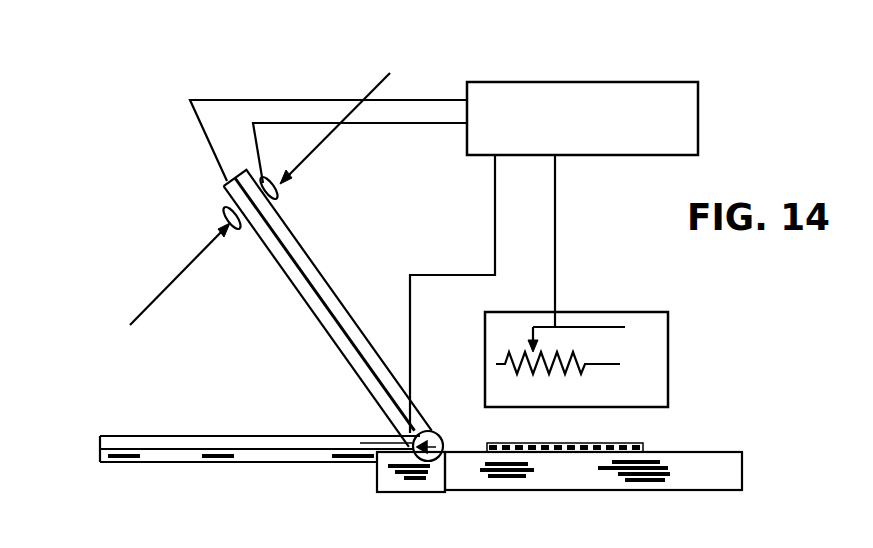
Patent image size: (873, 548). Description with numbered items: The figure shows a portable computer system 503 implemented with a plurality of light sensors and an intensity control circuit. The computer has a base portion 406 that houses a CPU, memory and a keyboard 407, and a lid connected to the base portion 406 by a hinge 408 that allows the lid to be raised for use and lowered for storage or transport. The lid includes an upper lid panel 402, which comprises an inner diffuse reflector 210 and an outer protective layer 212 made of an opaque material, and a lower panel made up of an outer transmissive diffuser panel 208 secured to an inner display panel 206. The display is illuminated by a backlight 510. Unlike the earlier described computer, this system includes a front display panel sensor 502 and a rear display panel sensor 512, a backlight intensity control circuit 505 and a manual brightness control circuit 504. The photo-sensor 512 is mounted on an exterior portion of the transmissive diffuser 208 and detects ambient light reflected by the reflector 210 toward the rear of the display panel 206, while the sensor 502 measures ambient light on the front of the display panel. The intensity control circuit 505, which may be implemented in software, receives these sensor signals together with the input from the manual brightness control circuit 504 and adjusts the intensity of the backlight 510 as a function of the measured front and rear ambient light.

The portable computer system 503 is at (513, 44).
The backlight intensity control circuit 505 is at (614, 82).
The manual brightness control circuit 504 is at (634, 312).
The front display panel sensor 502 is at (281, 206).
The rear display panel sensor 512 is at (241, 231).
The display panel 206 is at (312, 268).
The diffuser panel 208 is at (302, 303).
The hinge 408 is at (442, 437).
The base portion 406 is at (605, 491).
The keyboard 407 is at (603, 444).
The upper lid panel 402 is at (97, 449).
The diffuse reflector 210 is at (157, 434).
The protective layer 212 is at (188, 464).
The backlight 510 is at (370, 436).